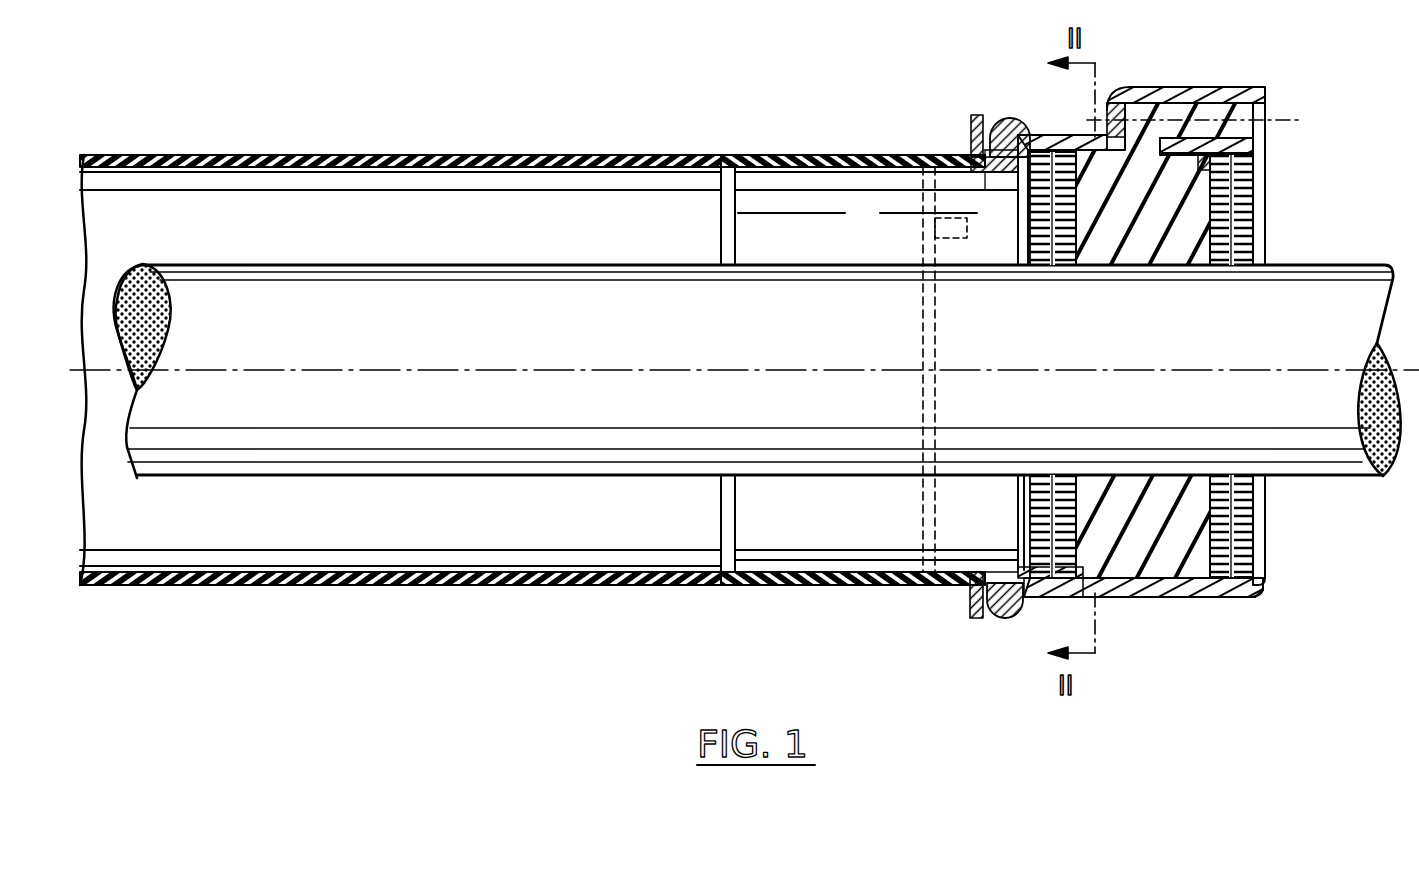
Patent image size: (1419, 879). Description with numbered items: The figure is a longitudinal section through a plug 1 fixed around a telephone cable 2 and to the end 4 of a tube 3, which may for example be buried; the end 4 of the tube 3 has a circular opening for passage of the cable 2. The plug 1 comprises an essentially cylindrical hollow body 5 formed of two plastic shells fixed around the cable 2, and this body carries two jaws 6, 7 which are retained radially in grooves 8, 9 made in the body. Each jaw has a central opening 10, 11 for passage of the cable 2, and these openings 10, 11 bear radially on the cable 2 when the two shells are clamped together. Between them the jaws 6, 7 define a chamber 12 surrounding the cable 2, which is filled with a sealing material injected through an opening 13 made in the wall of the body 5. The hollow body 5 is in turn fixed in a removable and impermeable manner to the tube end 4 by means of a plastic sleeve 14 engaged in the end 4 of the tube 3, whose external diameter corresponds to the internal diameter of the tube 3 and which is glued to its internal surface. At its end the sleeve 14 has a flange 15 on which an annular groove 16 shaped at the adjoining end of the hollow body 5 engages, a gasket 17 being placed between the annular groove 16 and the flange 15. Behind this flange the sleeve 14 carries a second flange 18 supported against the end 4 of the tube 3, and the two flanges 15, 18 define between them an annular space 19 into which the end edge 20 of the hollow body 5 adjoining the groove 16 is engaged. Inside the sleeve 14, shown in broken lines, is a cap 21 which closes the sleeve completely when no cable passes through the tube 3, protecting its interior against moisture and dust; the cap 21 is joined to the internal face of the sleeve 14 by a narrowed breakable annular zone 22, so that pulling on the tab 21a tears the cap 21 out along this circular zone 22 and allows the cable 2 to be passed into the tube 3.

The plug 1 is at (1166, 80).
The cable 2 is at (1341, 263).
The tube 3 is at (515, 155).
The end of the tube 4 is at (967, 603).
The hollow body 5 is at (1153, 588).
The jaw 6 is at (1017, 257).
The jaw 7 is at (1266, 232).
The groove 8 is at (1047, 606).
The groove 9 is at (1241, 586).
The central opening 10 is at (1050, 268).
The central opening 11 is at (1220, 268).
The chamber 12 is at (1180, 215).
The opening 13 is at (1268, 120).
The sleeve 14 is at (818, 175).
The flange 15 is at (1005, 178).
The annular groove 16 is at (1004, 118).
The gasket 17 is at (1000, 621).
The second flange 18 is at (976, 115).
The annular space 19 is at (1000, 150).
The end edge 20 is at (977, 153).
The cap 21 is at (923, 500).
The tab 21a is at (923, 293).
The breakable annular zone 22 is at (918, 190).